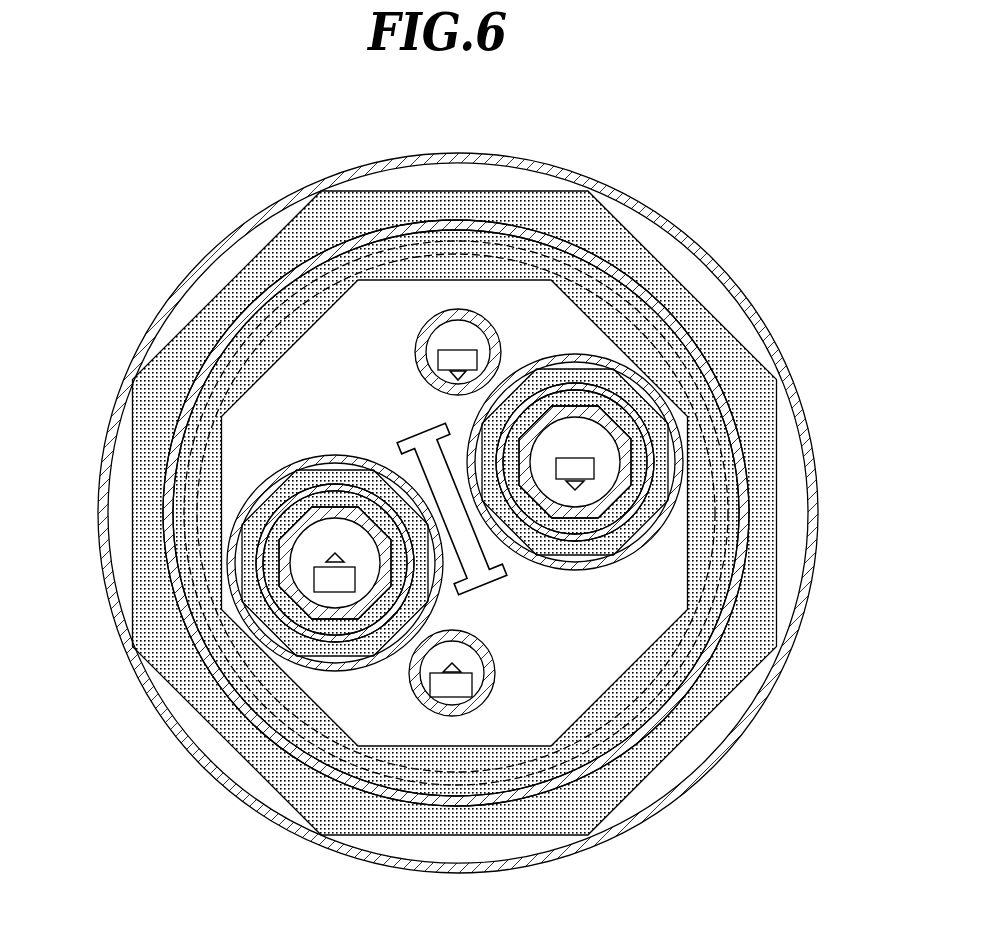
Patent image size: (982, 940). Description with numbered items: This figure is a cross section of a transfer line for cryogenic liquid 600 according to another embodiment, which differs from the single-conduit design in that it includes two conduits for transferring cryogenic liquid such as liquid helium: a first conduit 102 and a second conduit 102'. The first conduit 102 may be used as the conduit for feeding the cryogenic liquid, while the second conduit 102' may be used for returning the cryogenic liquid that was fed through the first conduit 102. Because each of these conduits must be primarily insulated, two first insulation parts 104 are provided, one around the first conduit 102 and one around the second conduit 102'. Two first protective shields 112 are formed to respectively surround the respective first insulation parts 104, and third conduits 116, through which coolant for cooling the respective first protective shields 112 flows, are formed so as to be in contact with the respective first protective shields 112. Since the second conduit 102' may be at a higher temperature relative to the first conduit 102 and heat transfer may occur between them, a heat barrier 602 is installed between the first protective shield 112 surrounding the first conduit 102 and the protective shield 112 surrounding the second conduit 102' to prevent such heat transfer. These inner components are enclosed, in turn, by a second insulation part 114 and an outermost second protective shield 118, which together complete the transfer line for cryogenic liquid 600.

The transfer line for cryogenic liquid 600 is at (451, 509).
The heat barrier 602 is at (423, 432).
The first conduit 102 is at (266, 639).
The second conduit 102' is at (665, 451).
The first insulation part 104 is at (243, 560).
The first protective shield 112 is at (270, 472).
The second insulation part 114 is at (660, 763).
The third conduit 116 is at (448, 716).
The second protective shield 118 is at (625, 822).